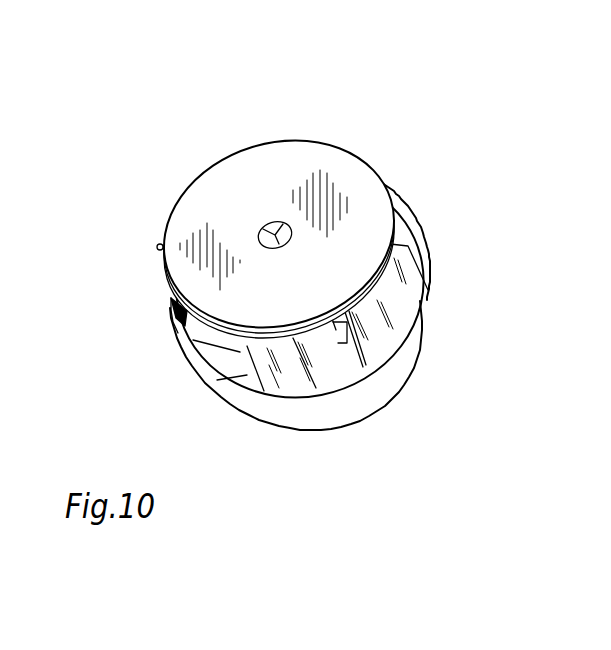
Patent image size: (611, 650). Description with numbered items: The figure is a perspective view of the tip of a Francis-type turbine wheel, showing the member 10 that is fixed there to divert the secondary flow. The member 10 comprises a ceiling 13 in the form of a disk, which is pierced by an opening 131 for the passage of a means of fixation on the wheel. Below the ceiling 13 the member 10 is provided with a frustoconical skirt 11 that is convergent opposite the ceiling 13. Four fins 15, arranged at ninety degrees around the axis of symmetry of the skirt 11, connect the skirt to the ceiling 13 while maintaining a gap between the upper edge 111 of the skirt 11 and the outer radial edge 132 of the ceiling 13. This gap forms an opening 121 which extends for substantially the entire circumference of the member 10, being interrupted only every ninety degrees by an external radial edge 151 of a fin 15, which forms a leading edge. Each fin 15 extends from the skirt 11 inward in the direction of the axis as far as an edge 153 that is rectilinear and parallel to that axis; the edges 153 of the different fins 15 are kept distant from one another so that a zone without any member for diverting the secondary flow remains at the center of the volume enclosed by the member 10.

The member 10 is at (444, 143).
The frustoconical skirt 11 is at (408, 350).
The ceiling 13 is at (260, 171).
The fin 15 is at (307, 397).
The upper edge of the skirt 111 is at (200, 368).
The opening 121 is at (331, 358).
The opening 131 is at (275, 235).
The outer radial edge of the ceiling 132 is at (185, 322).
The external radial edge of a fin 151 is at (414, 262).
The edge of fin 153 is at (352, 343).